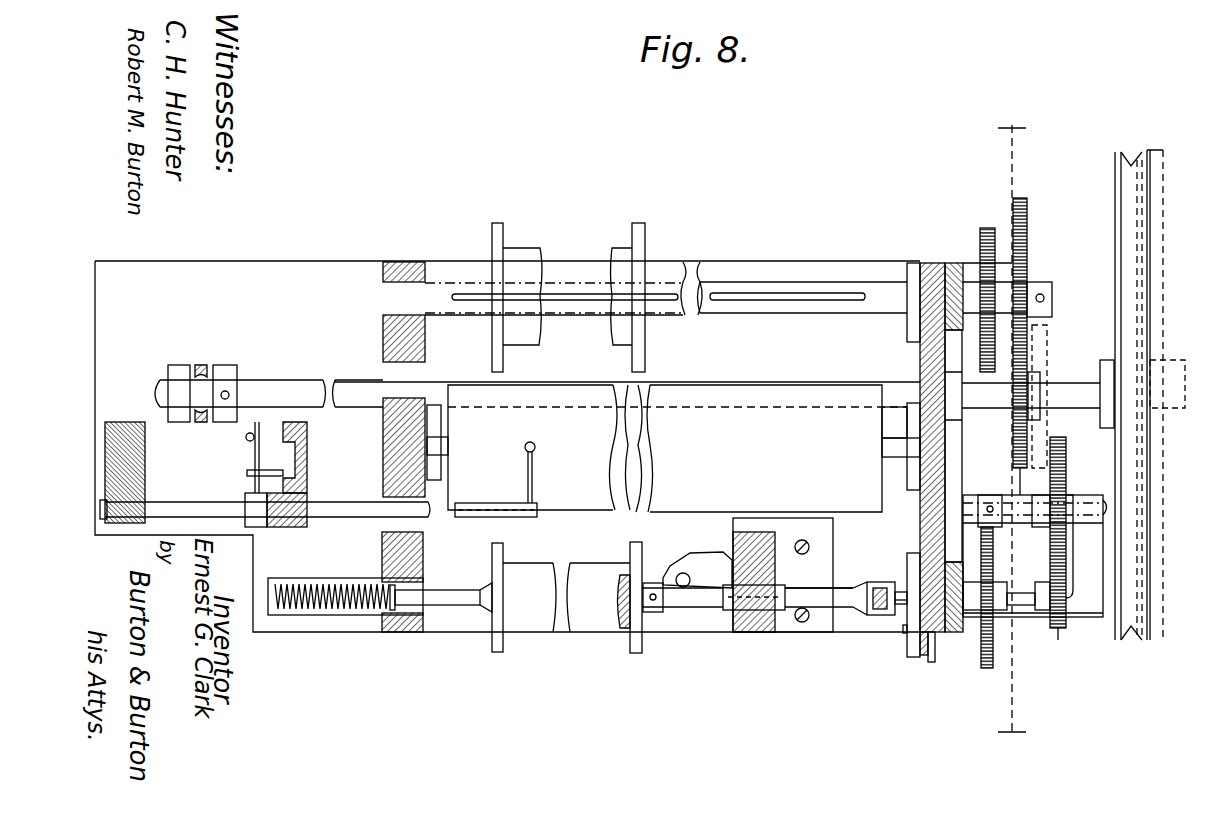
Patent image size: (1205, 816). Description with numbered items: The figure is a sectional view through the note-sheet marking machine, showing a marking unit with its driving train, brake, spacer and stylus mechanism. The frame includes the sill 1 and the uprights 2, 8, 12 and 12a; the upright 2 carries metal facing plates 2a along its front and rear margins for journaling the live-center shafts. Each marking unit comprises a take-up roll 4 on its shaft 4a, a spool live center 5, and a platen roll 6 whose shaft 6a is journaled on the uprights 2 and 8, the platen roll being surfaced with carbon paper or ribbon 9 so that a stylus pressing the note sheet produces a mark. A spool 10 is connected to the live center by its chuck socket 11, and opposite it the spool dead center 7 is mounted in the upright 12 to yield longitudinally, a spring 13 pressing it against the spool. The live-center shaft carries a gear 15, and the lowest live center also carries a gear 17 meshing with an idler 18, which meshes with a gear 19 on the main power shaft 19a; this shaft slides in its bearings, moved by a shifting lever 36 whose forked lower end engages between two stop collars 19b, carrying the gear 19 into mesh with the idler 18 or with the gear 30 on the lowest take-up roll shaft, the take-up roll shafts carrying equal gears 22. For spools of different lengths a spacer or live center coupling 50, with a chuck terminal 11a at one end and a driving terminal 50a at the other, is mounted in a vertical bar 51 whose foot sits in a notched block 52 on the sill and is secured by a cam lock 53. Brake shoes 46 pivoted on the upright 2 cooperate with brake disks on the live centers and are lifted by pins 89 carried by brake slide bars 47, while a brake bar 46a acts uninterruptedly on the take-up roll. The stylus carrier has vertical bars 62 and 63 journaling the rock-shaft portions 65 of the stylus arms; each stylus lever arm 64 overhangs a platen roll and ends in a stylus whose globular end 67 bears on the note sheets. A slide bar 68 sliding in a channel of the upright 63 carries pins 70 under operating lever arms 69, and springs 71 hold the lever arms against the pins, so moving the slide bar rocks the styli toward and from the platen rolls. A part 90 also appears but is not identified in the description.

The sill 1 is at (695, 622).
The upright 2 is at (920, 360).
The metal facing plates 2a is at (955, 628).
The take-up roll 4 is at (520, 255).
The take-up roll shaft 4a is at (815, 280).
The spool live center 5 is at (905, 605).
The platen roll 6 is at (713, 420).
The platen roll shaft 6a is at (892, 450).
The spool dead-center 7 is at (455, 590).
The upright 8 is at (383, 475).
The carbon paper or ribbon 9 is at (1012, 432).
The spool 10 is at (540, 625).
The chuck socket 11 is at (642, 635).
The chuck terminal 11a is at (878, 615).
The upright 12 is at (400, 632).
The upright 12a is at (383, 268).
The spring 13 is at (325, 615).
The gear 15 is at (990, 668).
The gear 17 is at (1058, 630).
The idler 18 is at (1066, 475).
The gear 19 is at (1012, 447).
The main power shaft 19a is at (300, 380).
The stop collars 19b is at (228, 365).
The gear 22 is at (985, 228).
The gear 30 is at (1027, 220).
The shifting lever 36 is at (201, 365).
The brake shoes 46 is at (912, 660).
The brake bar 46a is at (912, 315).
The brake slide bars 47 is at (928, 657).
The live center coupling or spacer 50 is at (835, 590).
The driving terminal 50a is at (653, 583).
The vertical bar 51 is at (765, 628).
The notched block 52 is at (745, 632).
The cam lock 53 is at (705, 565).
The vertical bar 62 is at (120, 422).
The vertical bar 63 is at (285, 527).
The stylus lever arm 64 is at (537, 480).
The rock-shaft portion 65 is at (350, 517).
The globular end 67 is at (536, 447).
The slide bar 68 is at (296, 470).
The operating lever arm 69 is at (255, 460).
The pin 70 is at (247, 473).
The spring 71 is at (246, 437).
The pins 89 is at (907, 630).
The wheel 90 is at (1115, 172).